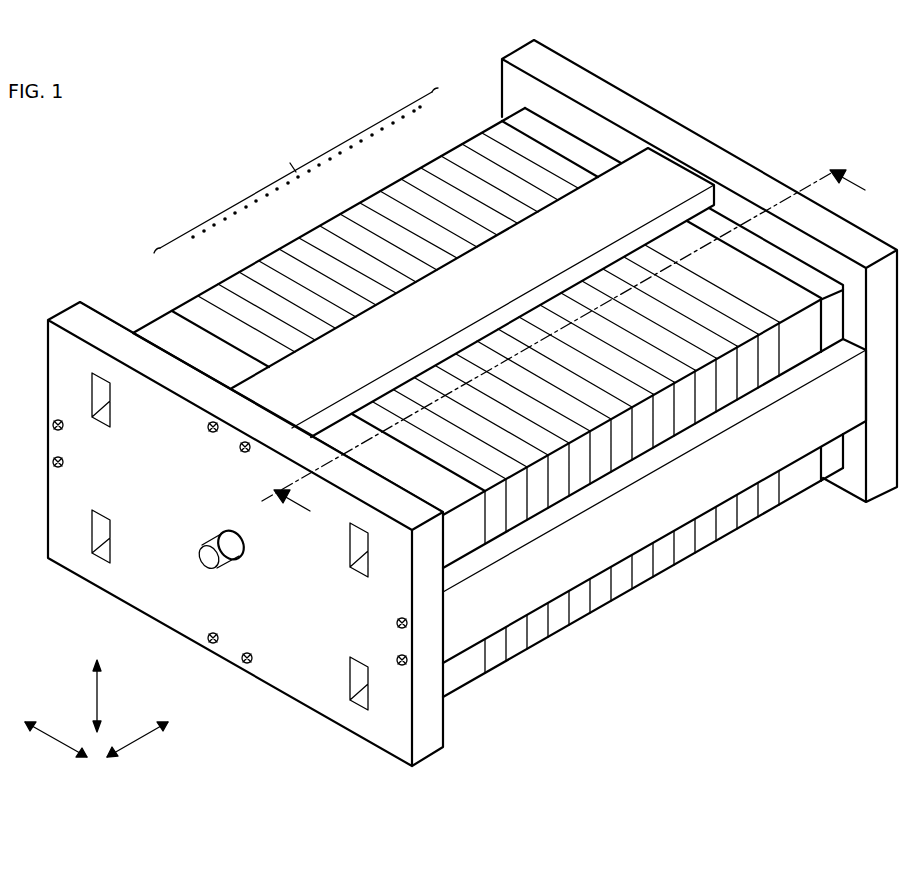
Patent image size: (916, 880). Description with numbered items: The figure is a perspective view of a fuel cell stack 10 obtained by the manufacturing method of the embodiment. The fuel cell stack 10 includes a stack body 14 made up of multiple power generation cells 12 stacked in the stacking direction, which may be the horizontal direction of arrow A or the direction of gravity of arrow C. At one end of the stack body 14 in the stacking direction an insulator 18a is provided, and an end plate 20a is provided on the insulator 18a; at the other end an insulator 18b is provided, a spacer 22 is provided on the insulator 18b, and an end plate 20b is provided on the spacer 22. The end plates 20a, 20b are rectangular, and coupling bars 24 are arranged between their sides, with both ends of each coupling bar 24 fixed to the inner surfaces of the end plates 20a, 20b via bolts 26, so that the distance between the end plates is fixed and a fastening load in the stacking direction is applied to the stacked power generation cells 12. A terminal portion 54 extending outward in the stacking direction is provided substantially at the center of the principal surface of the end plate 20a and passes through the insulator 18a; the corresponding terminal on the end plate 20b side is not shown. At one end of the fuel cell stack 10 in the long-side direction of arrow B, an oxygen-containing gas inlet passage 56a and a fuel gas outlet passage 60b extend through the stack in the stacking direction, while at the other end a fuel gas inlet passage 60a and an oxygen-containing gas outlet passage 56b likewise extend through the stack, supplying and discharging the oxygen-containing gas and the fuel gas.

The fuel cell stack 10 is at (82, 162).
The power generation cell 12 is at (204, 300).
The stack body 14 is at (488, 392).
The insulator 18a is at (157, 332).
The insulator 18b is at (523, 145).
The end plate 20a is at (70, 316).
The end plate 20b is at (518, 54).
The spacer 22 is at (603, 158).
The coupling bar 24 is at (687, 178).
The bolt 26 is at (244, 452).
The terminal portion 54 is at (212, 568).
The oxygen-containing gas inlet passage 56a is at (358, 550).
The oxygen-containing gas outlet passage 56b is at (103, 530).
The fuel gas inlet passage 60a is at (103, 393).
The fuel gas outlet passage 60b is at (358, 677).